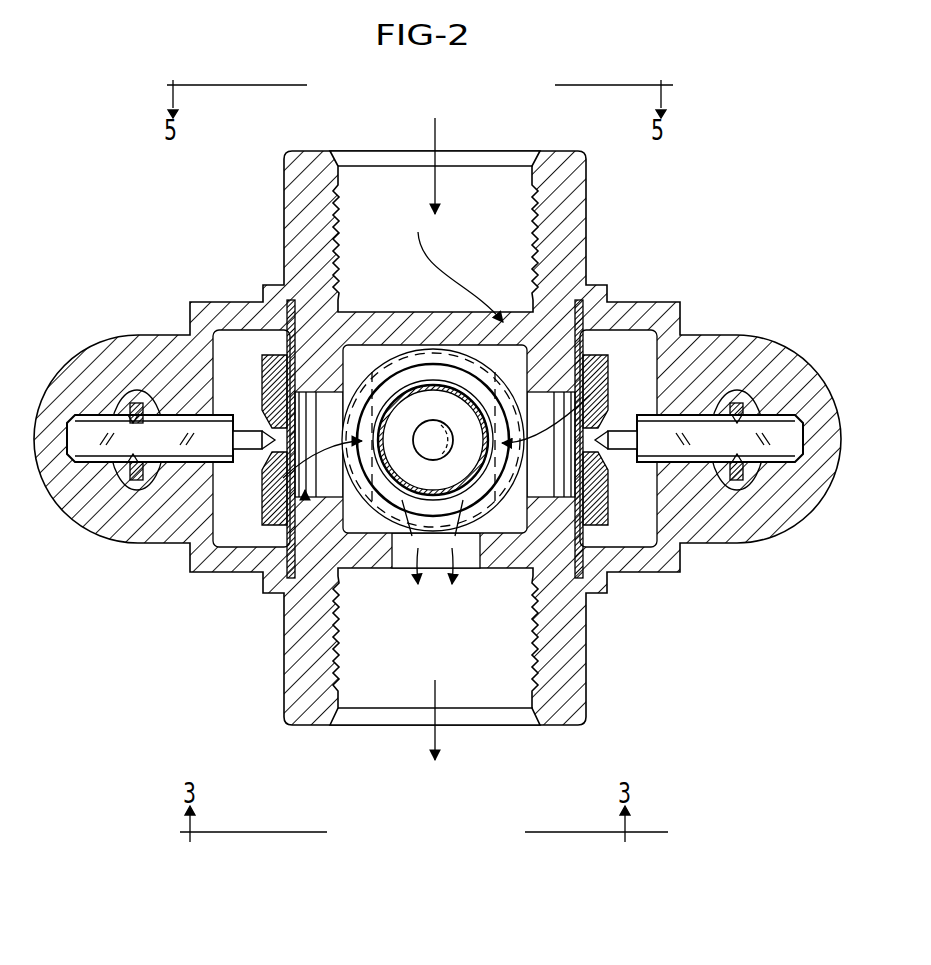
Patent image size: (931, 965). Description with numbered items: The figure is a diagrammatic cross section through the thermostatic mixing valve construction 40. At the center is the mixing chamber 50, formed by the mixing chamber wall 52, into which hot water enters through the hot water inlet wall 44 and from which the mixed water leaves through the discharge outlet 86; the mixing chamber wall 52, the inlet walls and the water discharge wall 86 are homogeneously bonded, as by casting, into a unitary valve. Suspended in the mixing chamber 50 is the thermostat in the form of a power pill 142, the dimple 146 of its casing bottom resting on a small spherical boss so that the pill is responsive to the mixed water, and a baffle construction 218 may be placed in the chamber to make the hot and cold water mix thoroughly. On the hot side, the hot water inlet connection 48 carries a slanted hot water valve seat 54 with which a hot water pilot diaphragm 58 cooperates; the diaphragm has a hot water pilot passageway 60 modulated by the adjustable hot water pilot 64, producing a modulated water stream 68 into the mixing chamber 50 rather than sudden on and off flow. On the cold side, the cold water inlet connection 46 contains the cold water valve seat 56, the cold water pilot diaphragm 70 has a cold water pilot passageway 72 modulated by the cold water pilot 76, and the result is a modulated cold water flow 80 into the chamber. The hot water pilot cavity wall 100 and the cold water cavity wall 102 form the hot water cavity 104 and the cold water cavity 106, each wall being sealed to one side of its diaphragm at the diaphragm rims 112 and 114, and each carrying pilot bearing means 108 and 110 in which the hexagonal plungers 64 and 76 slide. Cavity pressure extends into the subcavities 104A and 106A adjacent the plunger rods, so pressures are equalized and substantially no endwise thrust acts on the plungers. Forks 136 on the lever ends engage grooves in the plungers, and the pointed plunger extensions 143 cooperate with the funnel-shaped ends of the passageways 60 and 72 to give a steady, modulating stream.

The valve construction 40 is at (437, 438).
The hot water inlet wall 44 is at (590, 212).
The water discharge wall 86 is at (589, 661).
The mixing chamber 50 is at (415, 370).
The mixing chamber wall 52 is at (366, 320).
The power pill 142 is at (450, 357).
The dimple 146 is at (452, 426).
The modulated cold water flow 80 is at (425, 452).
The modulated water stream 68 is at (445, 451).
The cold water valve seat 56 is at (278, 384).
The pointed plunger extension 143 is at (243, 430).
The cold water pilot passageway 72 is at (283, 465).
The cold water inlet connection 46 is at (305, 487).
The cold water pilot diaphragm 70 is at (300, 514).
The cold water pilot 76 is at (195, 445).
The fork 136 is at (137, 402).
The cold water cavity 106 is at (227, 533).
The subcavity 106A is at (128, 470).
The pilot bearing means 110 is at (95, 468).
The cold water cavity wall 102 is at (216, 573).
The diaphragm rim 114 is at (278, 585).
The baffle construction 218 is at (437, 547).
The diaphragm rim 112 is at (598, 575).
The hot water pilot cavity wall 100 is at (657, 580).
The hot water cavity 104 is at (647, 543).
The subcavity 104A is at (753, 475).
The pilot bearing means 108 is at (777, 416).
The hot water pilot 64 is at (690, 414).
The hot water pilot diaphragm 58 is at (603, 392).
The hot water pilot passageway 60 is at (603, 414).
The hot water inlet connection 48 is at (592, 472).
The hot water valve seat 54 is at (595, 515).